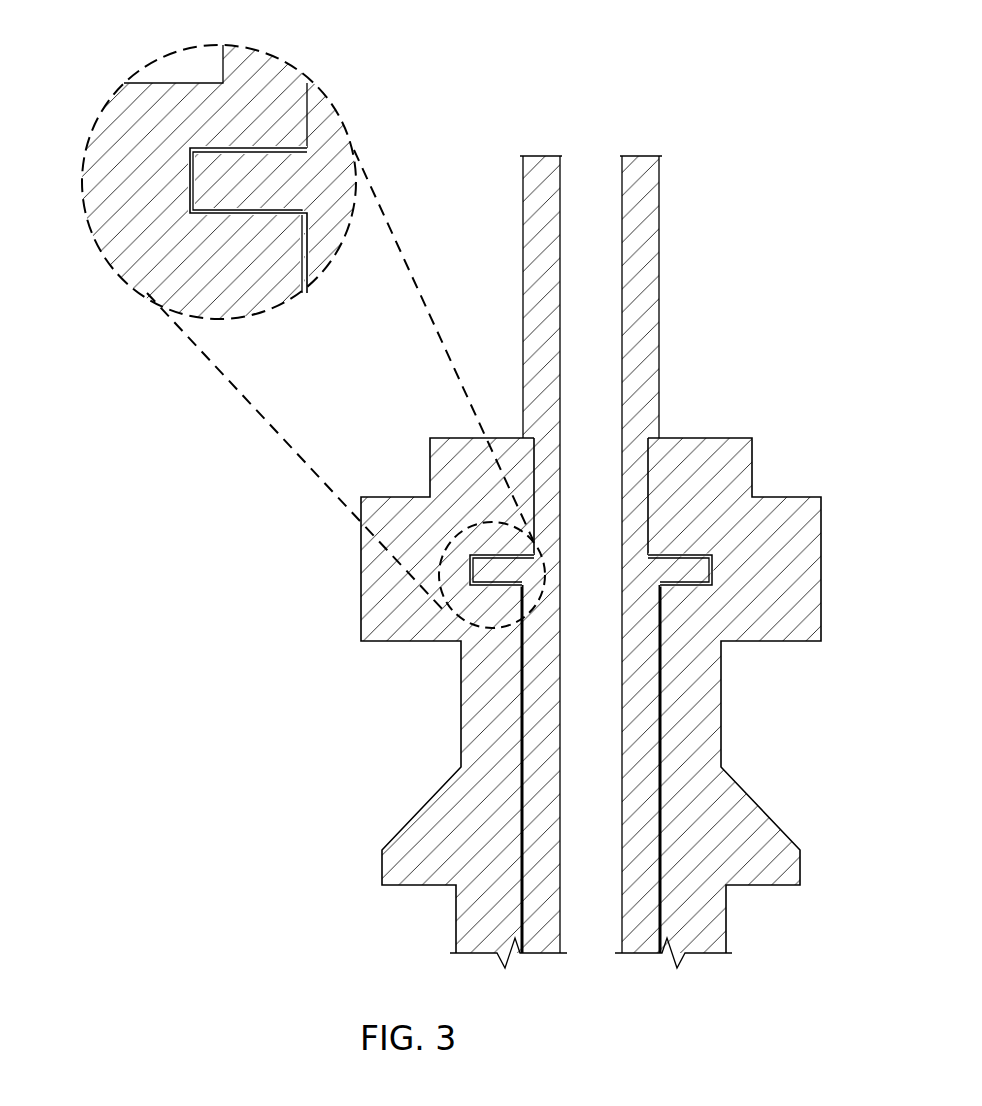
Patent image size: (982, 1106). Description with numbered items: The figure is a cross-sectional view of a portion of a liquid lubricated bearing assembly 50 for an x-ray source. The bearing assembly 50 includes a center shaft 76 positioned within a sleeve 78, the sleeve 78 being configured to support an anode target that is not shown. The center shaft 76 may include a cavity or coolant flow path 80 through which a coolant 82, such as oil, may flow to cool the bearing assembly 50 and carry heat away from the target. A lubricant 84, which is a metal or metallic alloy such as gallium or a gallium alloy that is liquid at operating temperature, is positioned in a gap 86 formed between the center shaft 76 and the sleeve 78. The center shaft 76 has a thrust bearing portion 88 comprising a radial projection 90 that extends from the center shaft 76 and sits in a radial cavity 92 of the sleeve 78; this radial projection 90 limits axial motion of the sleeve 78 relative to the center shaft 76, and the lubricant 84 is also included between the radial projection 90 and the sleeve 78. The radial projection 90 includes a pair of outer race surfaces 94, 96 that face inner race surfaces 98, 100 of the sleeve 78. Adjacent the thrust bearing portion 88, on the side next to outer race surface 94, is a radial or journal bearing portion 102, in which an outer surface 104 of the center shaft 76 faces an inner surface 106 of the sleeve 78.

The bearing assembly 50 is at (378, 722).
The center shaft 76 is at (523, 203).
The sleeve 78 is at (433, 437).
The coolant flow path 80 is at (594, 152).
The coolant 82 is at (603, 372).
The lubricant 84 is at (310, 242).
The gap 86 is at (512, 703).
The thrust bearing portion 88 is at (450, 569).
The radial projection 90 is at (497, 555).
The radial cavity 92 is at (205, 147).
The outer race surface 94 is at (190, 175).
The outer race surface 96 is at (330, 148).
The inner race surface 98 is at (222, 233).
The inner race surface 100 is at (255, 152).
The journal bearing portion 102 is at (685, 660).
The outer surface 104 is at (308, 284).
The inner surface 106 is at (296, 287).